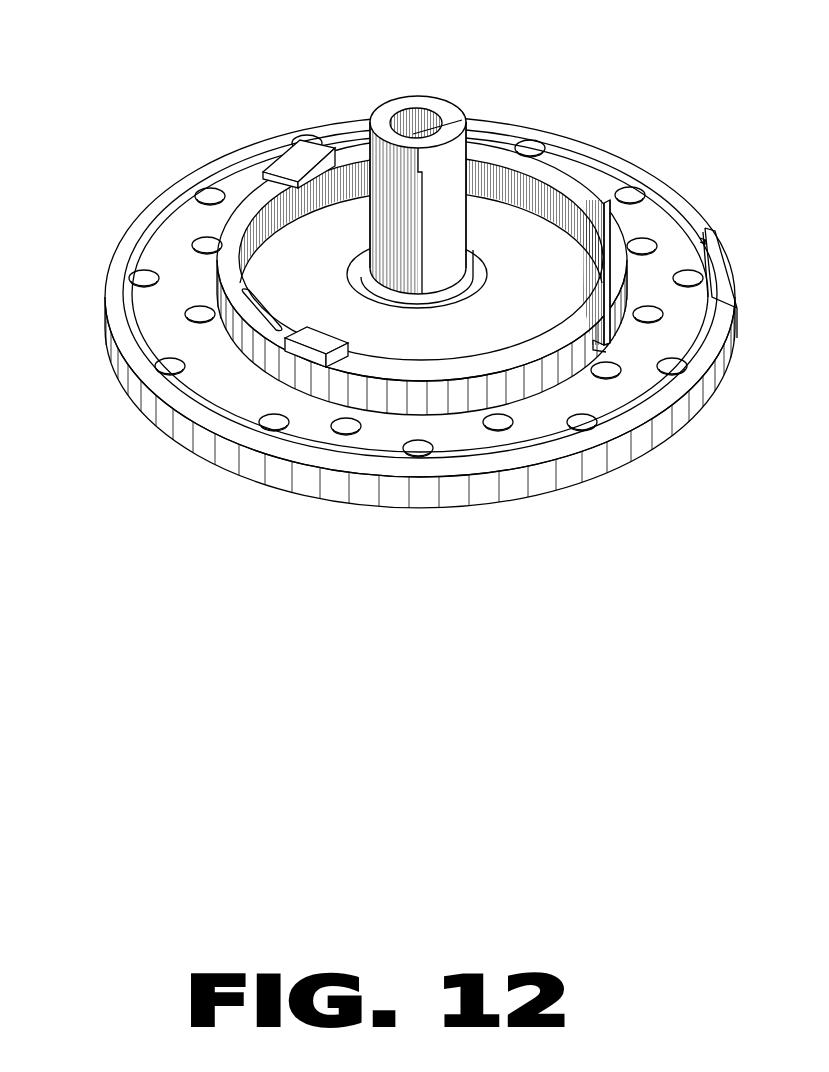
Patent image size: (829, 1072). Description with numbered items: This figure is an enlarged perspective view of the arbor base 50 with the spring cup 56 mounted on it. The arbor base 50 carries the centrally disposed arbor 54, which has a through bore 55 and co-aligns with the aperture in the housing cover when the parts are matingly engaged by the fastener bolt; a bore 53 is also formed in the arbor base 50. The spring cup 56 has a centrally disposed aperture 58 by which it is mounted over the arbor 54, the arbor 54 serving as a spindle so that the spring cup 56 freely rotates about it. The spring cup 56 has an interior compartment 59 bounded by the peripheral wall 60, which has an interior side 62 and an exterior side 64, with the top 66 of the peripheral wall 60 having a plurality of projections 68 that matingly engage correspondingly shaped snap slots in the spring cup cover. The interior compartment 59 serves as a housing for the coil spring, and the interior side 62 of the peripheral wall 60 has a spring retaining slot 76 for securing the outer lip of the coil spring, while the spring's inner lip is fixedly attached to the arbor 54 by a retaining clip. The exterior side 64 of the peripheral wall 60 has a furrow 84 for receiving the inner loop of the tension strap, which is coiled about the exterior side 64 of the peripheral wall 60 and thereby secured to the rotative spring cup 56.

The arbor base 50 is at (132, 380).
The bore in arbor base 53 is at (417, 297).
The arbor 54 is at (445, 113).
The through bore in arbor 55 is at (410, 130).
The spring cup 56 is at (243, 195).
The aperture in spring cup 58 is at (360, 281).
The interior compartment of spring cup 59 is at (510, 230).
The peripheral wall of spring cup 60 is at (216, 278).
The interior side of peripheral wall 62 is at (563, 212).
The exterior side of peripheral wall 64 is at (290, 372).
The top of peripheral wall 66 is at (232, 228).
The projection on top 68 is at (305, 160).
The spring retaining slot 76 is at (250, 315).
The furrow 84 is at (606, 203).